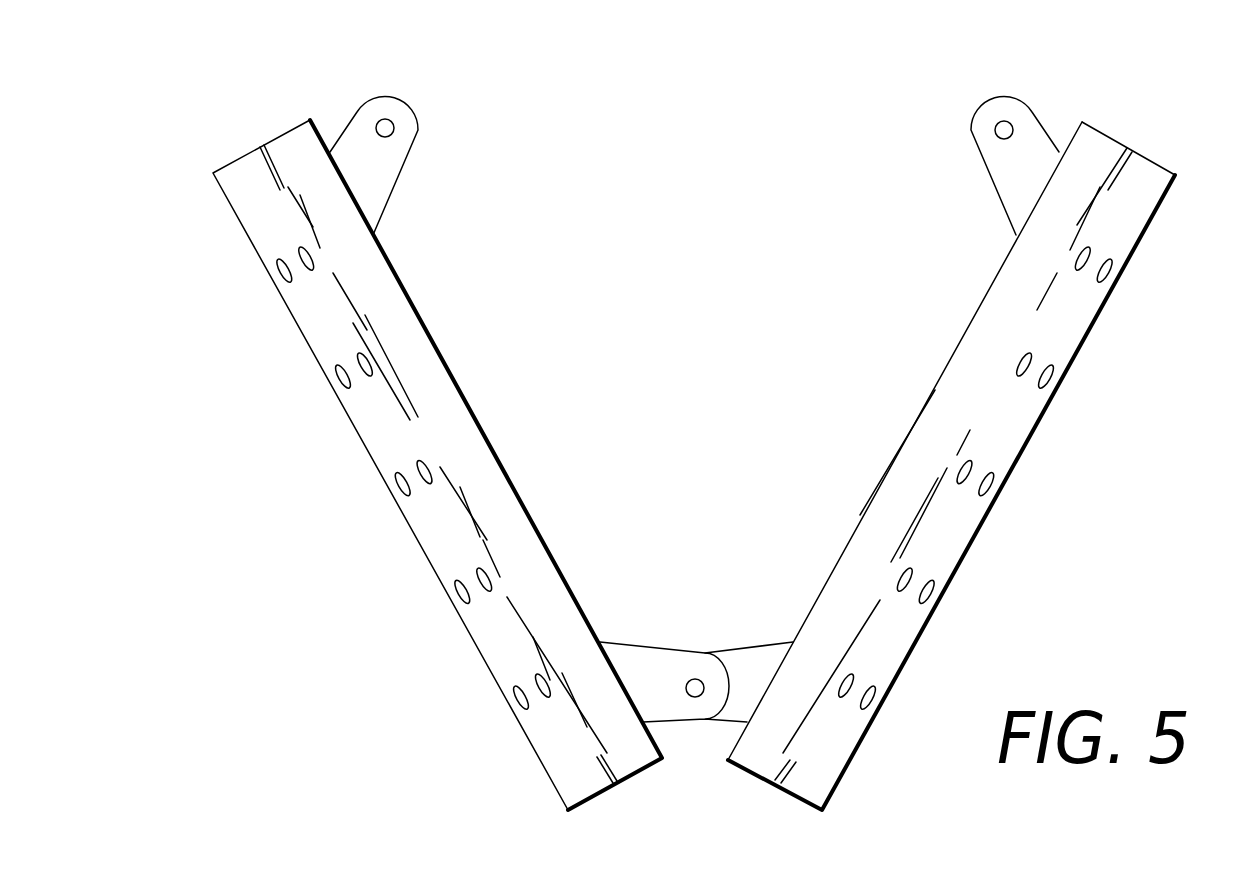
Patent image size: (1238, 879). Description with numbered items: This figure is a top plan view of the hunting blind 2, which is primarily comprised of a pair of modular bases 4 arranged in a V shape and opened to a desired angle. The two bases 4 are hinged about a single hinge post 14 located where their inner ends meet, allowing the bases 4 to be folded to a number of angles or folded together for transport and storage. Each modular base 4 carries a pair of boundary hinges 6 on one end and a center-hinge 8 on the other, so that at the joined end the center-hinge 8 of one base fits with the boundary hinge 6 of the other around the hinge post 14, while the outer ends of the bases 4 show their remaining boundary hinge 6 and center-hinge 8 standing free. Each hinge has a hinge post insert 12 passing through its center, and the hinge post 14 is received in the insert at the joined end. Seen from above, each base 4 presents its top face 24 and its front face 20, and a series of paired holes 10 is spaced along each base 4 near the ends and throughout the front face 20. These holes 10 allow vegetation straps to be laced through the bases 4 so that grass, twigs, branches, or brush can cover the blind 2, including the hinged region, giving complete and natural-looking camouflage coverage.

The hunting blind 2 is at (160, 94).
The modular base 4 is at (488, 328).
The boundary hinge 6 is at (977, 145).
The center-hinge 8 is at (378, 96).
The holes 10 is at (402, 482).
The hinge post insert 12 is at (389, 125).
The hinge post 14 is at (697, 682).
The front face 20 is at (516, 656).
The top face 24 is at (503, 504).